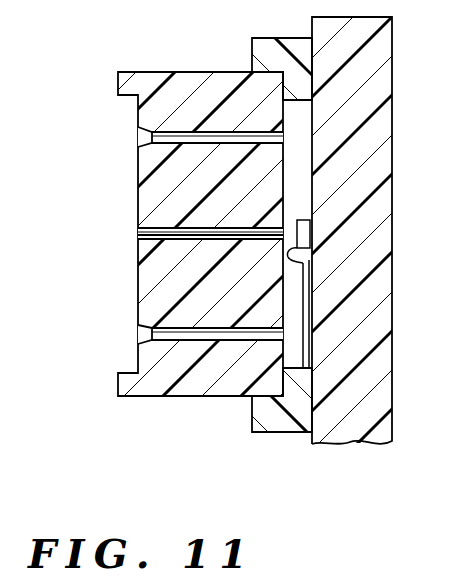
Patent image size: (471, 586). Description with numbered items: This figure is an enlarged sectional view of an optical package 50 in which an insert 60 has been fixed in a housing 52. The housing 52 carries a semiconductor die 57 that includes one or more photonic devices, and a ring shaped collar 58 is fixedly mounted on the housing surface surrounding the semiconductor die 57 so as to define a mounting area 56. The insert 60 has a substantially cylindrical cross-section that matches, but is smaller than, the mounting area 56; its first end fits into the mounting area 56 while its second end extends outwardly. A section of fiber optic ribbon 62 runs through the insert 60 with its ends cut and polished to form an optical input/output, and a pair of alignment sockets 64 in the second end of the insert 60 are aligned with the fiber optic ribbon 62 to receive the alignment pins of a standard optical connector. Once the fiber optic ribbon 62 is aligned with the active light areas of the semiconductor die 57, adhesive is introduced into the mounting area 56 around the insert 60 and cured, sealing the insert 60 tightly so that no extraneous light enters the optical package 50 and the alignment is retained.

The optical package 50 is at (158, 507).
The housing 52 is at (395, 87).
The mounting area 56 is at (252, 71).
The semiconductor die 57 is at (304, 236).
The ring shaped collar 58 is at (277, 433).
The insert 60 is at (170, 72).
The fiber optic ribbon 62 is at (139, 237).
The alignment sockets 64 is at (144, 138).